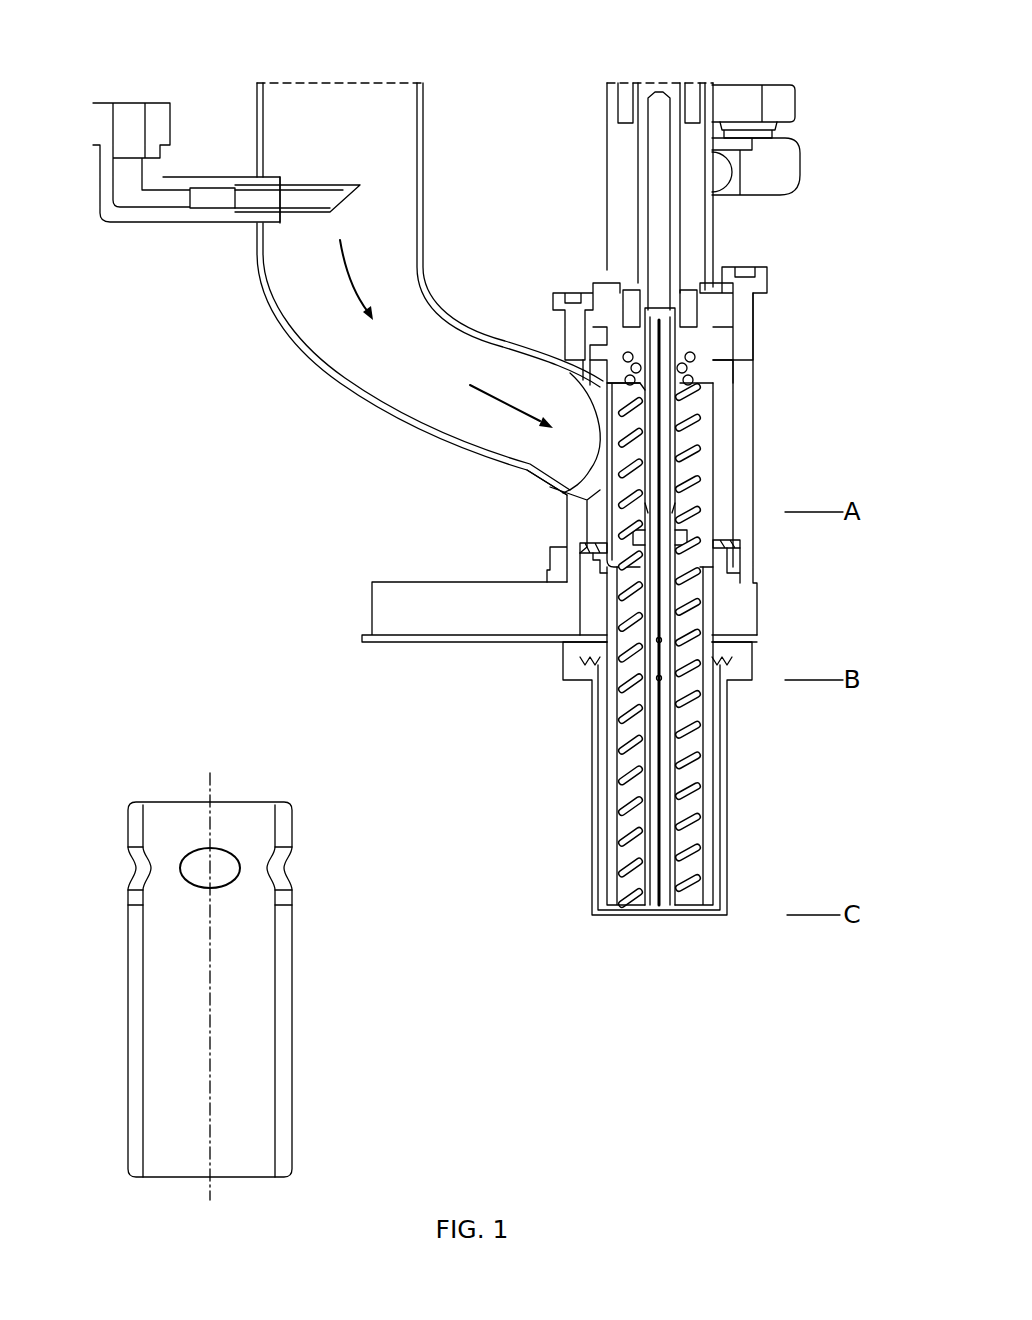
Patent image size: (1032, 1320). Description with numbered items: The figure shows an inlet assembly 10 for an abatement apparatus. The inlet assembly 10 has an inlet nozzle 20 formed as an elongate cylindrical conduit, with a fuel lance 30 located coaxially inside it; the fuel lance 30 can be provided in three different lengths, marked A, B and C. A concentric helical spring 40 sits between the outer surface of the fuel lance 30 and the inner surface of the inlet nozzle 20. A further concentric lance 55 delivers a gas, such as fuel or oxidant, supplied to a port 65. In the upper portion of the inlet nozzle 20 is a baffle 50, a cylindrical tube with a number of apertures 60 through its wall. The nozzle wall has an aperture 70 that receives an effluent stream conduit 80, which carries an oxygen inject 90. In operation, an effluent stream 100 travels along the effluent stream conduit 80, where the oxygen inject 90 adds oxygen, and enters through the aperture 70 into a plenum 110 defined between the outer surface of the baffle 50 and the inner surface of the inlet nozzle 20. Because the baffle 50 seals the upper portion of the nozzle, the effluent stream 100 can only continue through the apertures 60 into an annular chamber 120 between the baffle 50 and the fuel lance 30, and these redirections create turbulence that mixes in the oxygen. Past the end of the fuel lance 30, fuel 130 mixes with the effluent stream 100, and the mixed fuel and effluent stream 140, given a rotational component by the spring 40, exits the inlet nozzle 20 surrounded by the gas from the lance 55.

The inlet assembly 10 is at (180, 518).
The inlet nozzle 20 is at (757, 500).
The fuel lance 30 is at (665, 445).
The helical spring 40 is at (713, 885).
The baffle 50 is at (717, 472).
The lance 55 is at (607, 885).
The apertures 60 is at (288, 872).
The port 65 is at (388, 613).
The aperture 70 is at (600, 440).
The effluent stream conduit 80 is at (325, 380).
The oxygen inject 90 is at (167, 223).
The effluent stream 100 is at (342, 125).
The plenum 110 is at (723, 383).
The annular chamber 120 is at (597, 503).
The fuel 130 is at (656, 62).
The mixed fuel and effluent stream 140 is at (630, 912).